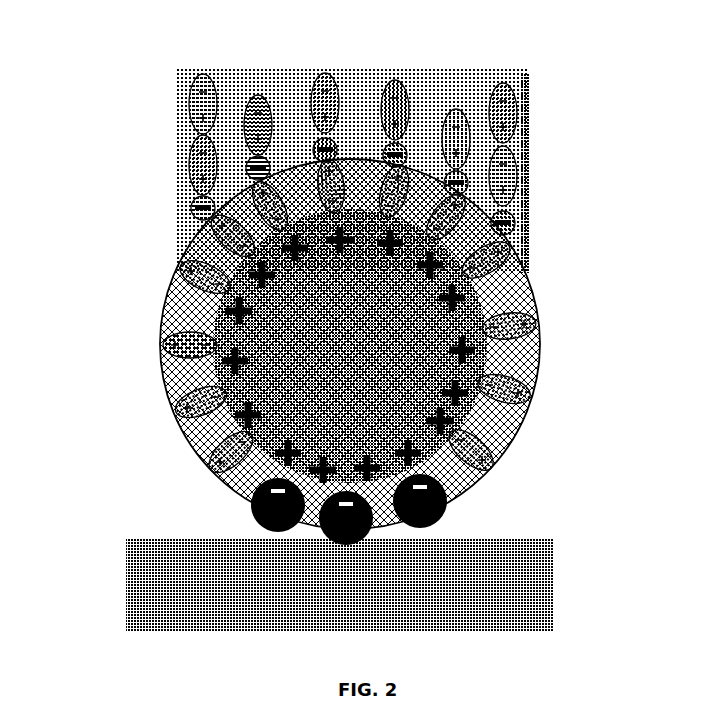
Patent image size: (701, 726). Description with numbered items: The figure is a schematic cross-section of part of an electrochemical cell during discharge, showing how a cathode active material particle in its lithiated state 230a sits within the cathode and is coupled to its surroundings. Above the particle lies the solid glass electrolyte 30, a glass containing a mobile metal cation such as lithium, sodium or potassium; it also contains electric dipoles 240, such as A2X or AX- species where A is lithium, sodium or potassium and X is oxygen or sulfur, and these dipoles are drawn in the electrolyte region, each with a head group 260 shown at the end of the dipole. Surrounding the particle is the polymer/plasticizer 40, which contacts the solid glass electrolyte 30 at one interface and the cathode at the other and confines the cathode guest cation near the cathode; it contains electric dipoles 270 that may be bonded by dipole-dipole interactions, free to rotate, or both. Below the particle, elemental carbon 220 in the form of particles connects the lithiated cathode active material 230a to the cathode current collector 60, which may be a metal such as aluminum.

The solid glass electrolyte 30 is at (516, 143).
The polymer/plasticizer 40 is at (497, 283).
The cathode current collector 60 is at (157, 575).
The elemental carbon 220 is at (242, 505).
The lithiated state of cathode active material 230a is at (273, 368).
The electric dipoles 240 is at (181, 161).
The surfactant head groups 260 is at (188, 199).
The electric dipoles 270 is at (502, 319).